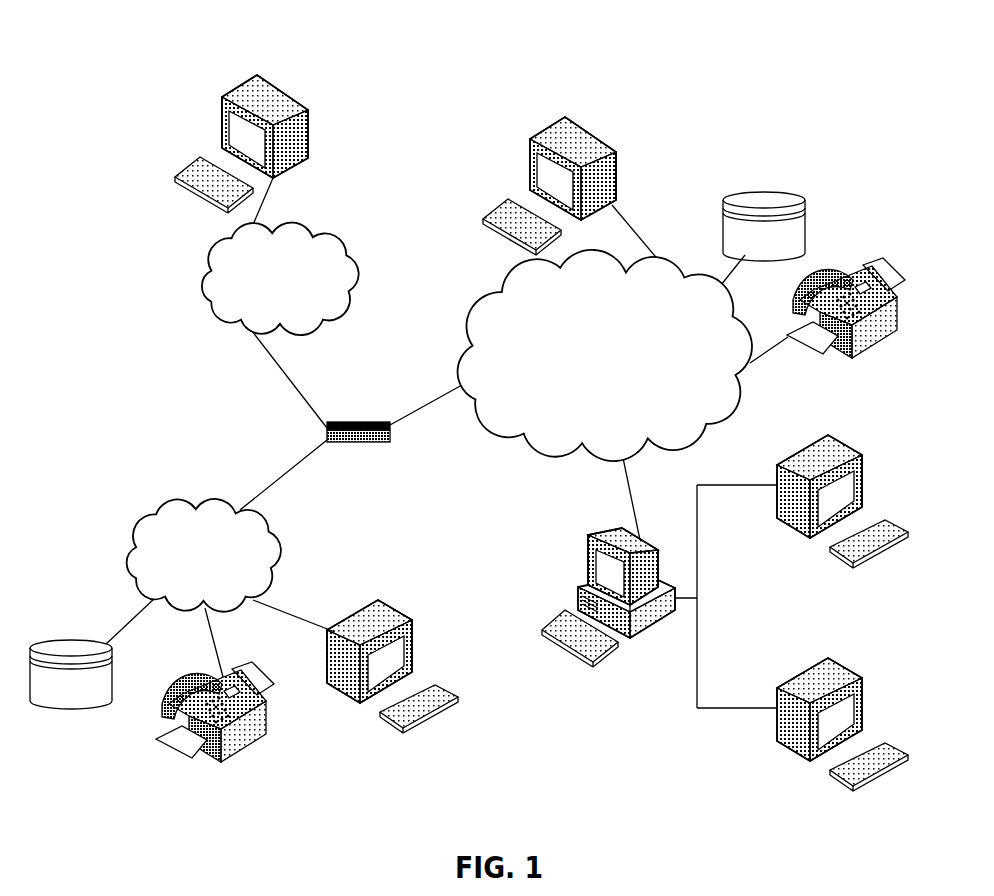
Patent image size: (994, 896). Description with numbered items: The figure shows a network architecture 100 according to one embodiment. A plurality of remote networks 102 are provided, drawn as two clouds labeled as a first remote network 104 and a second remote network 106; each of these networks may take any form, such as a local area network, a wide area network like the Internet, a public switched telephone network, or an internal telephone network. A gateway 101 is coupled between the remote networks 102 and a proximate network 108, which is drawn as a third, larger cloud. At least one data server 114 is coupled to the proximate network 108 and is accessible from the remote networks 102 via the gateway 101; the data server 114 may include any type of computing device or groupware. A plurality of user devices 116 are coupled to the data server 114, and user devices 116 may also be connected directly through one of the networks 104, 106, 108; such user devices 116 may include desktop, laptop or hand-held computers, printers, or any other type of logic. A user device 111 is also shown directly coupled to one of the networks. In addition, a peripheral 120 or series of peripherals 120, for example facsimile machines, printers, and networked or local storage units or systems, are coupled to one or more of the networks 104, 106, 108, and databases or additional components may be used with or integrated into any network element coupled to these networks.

The architecture 100 is at (152, 60).
The gateway 101 is at (342, 420).
The remote networks 102 is at (178, 304).
The first remote network 104 is at (133, 531).
The second remote network 106 is at (352, 248).
The proximate network 108 is at (707, 425).
The user device 111 is at (620, 152).
The data server 114 is at (590, 550).
The user devices 116 is at (310, 115).
The peripheral 120 is at (805, 202).